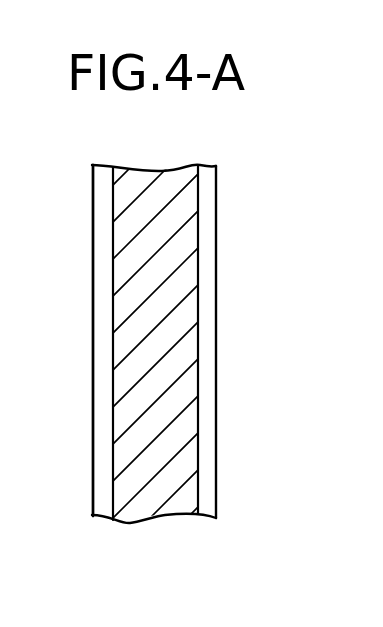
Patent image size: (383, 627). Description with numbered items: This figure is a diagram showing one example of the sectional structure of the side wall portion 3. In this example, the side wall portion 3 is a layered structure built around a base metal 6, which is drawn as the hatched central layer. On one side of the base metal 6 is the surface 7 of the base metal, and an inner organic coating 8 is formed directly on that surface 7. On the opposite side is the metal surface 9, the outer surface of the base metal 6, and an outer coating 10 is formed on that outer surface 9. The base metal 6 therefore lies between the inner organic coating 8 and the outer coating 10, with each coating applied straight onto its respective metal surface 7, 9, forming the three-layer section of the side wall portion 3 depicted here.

The side wall portion 3 is at (228, 192).
The base metal 6 is at (157, 488).
The surface of the base metal 7 is at (202, 375).
The inner organic coating 8 is at (207, 283).
The metal surface 9 is at (108, 395).
The outer coating 10 is at (105, 290).